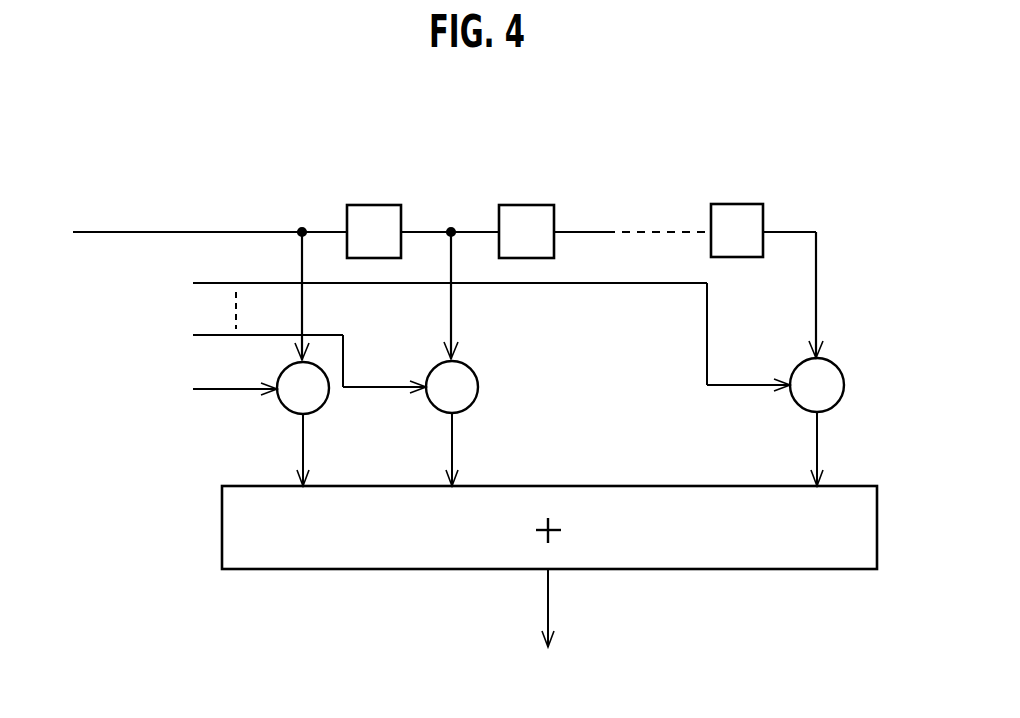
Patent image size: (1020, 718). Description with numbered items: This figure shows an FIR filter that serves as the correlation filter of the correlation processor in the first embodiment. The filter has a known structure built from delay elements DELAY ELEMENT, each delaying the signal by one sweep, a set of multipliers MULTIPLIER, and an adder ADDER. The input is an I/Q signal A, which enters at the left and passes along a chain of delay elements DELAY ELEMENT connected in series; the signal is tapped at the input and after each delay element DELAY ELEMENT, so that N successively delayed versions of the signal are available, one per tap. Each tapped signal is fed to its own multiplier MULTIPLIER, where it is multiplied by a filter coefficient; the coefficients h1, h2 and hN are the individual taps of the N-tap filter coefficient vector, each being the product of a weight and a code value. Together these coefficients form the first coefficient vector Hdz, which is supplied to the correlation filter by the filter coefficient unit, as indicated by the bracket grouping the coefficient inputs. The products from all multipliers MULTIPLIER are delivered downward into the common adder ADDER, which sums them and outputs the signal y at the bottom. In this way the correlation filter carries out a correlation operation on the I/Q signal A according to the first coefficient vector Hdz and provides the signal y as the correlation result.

The I/Q signal A is at (432, 291).
The delay element DELAY ELEMENT is at (742, 203).
The multiplier MULTIPLIER is at (800, 412).
The first coefficient vector Hdz is at (185, 286).
The filter coefficient h1 is at (235, 376).
The filter coefficient h2 is at (384, 375).
The filter coefficient hN is at (748, 372).
The adder ADDER is at (812, 569).
The output signal y is at (549, 620).